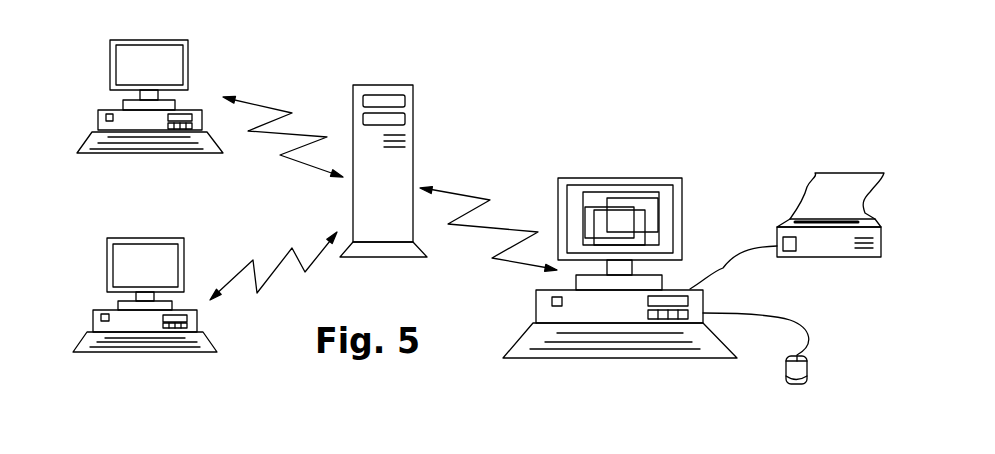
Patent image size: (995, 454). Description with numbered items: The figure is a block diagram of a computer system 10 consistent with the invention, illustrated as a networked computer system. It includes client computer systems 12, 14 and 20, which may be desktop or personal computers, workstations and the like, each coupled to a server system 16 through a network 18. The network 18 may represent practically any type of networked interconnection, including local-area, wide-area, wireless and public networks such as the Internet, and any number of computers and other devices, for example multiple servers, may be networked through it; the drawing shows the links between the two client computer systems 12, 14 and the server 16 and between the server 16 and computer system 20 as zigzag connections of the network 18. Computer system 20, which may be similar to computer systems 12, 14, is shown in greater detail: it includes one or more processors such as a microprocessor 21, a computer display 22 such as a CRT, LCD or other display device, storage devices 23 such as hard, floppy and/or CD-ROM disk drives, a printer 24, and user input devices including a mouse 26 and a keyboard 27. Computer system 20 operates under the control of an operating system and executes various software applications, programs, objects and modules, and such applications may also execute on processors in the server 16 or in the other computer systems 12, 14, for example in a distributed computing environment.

The computer system 10 is at (546, 89).
The client computer system 12 is at (110, 54).
The client computer system 14 is at (107, 243).
The server system 16 is at (372, 85).
The network 18 is at (283, 257).
The computer system 20 is at (676, 173).
The microprocessor 21 is at (590, 314).
The computer display 22 is at (592, 178).
The storage devices 23 is at (665, 318).
The printer 24 is at (792, 225).
The mouse 26 is at (802, 373).
The keyboard 27 is at (523, 355).